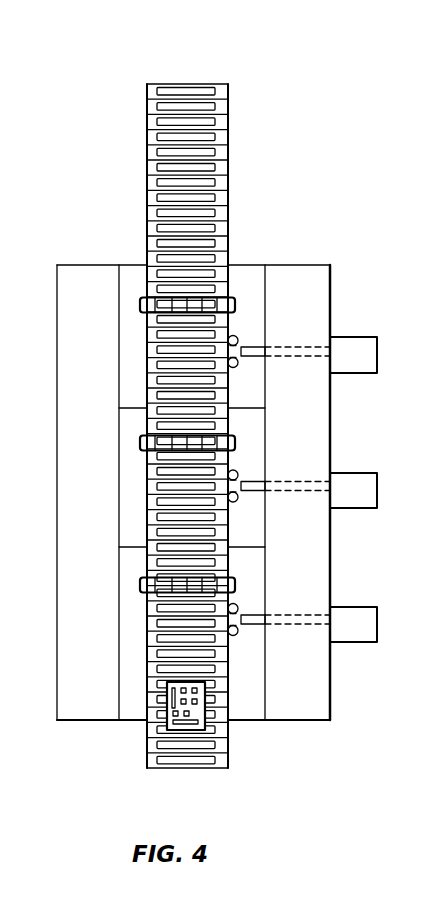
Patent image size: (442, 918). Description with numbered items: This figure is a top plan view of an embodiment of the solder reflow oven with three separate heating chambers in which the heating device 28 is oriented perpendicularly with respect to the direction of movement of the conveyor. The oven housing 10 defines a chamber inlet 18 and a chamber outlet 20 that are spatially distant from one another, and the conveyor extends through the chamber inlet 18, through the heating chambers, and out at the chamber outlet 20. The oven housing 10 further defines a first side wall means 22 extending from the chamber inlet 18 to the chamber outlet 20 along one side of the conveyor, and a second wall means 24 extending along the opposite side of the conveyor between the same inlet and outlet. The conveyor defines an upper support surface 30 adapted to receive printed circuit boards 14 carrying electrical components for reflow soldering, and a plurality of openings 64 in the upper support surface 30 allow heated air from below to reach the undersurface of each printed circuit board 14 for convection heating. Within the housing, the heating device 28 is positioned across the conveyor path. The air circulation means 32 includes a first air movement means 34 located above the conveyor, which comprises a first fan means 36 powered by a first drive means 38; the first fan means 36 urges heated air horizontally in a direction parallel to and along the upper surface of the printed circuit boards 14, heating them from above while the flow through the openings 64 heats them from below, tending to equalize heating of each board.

The oven housing 10 is at (212, 494).
The printed circuit board 14 is at (197, 716).
The chamber inlet 18 is at (130, 721).
The chamber outlet 20 is at (133, 272).
The first side wall means 22 is at (333, 312).
The second wall means 24 is at (57, 320).
The heating device 28 is at (140, 312).
The upper support surface 30 is at (183, 407).
The air circulation means 32 is at (255, 491).
The first air movement means 34 is at (252, 363).
The first fan means 36 is at (235, 636).
The first drive means 38 is at (352, 509).
The openings 64 is at (160, 133).